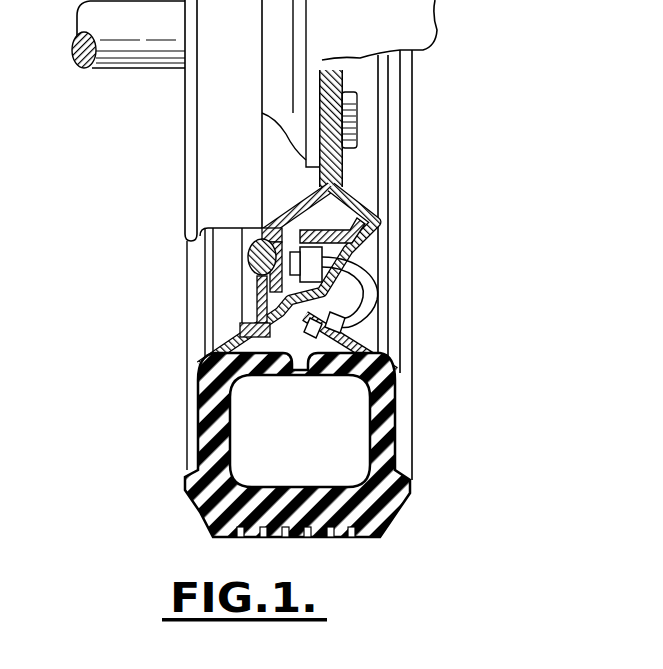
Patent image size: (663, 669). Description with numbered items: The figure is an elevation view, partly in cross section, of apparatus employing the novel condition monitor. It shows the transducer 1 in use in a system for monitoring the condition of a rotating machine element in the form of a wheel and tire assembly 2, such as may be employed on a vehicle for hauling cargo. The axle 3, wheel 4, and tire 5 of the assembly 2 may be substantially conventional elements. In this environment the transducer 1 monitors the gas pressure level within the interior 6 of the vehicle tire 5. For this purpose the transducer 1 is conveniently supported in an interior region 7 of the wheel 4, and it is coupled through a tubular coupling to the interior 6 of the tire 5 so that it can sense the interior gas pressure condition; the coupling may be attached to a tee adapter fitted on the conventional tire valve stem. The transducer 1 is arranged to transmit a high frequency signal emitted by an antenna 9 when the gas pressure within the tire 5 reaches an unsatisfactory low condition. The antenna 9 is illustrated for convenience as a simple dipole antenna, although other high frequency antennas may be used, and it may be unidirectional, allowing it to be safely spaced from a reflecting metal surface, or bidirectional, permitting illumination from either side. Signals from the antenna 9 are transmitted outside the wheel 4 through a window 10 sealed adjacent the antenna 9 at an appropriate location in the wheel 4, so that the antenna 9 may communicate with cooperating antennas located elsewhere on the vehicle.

The transducer 1 is at (313, 250).
The wheel and tire assembly 2 is at (455, 91).
The axle 3 is at (104, 70).
The wheel 4 is at (222, 330).
The tire 5 is at (200, 432).
The interior 6 is at (305, 430).
The interior region 7 is at (316, 205).
The antenna 9 is at (280, 230).
The window 10 is at (250, 260).